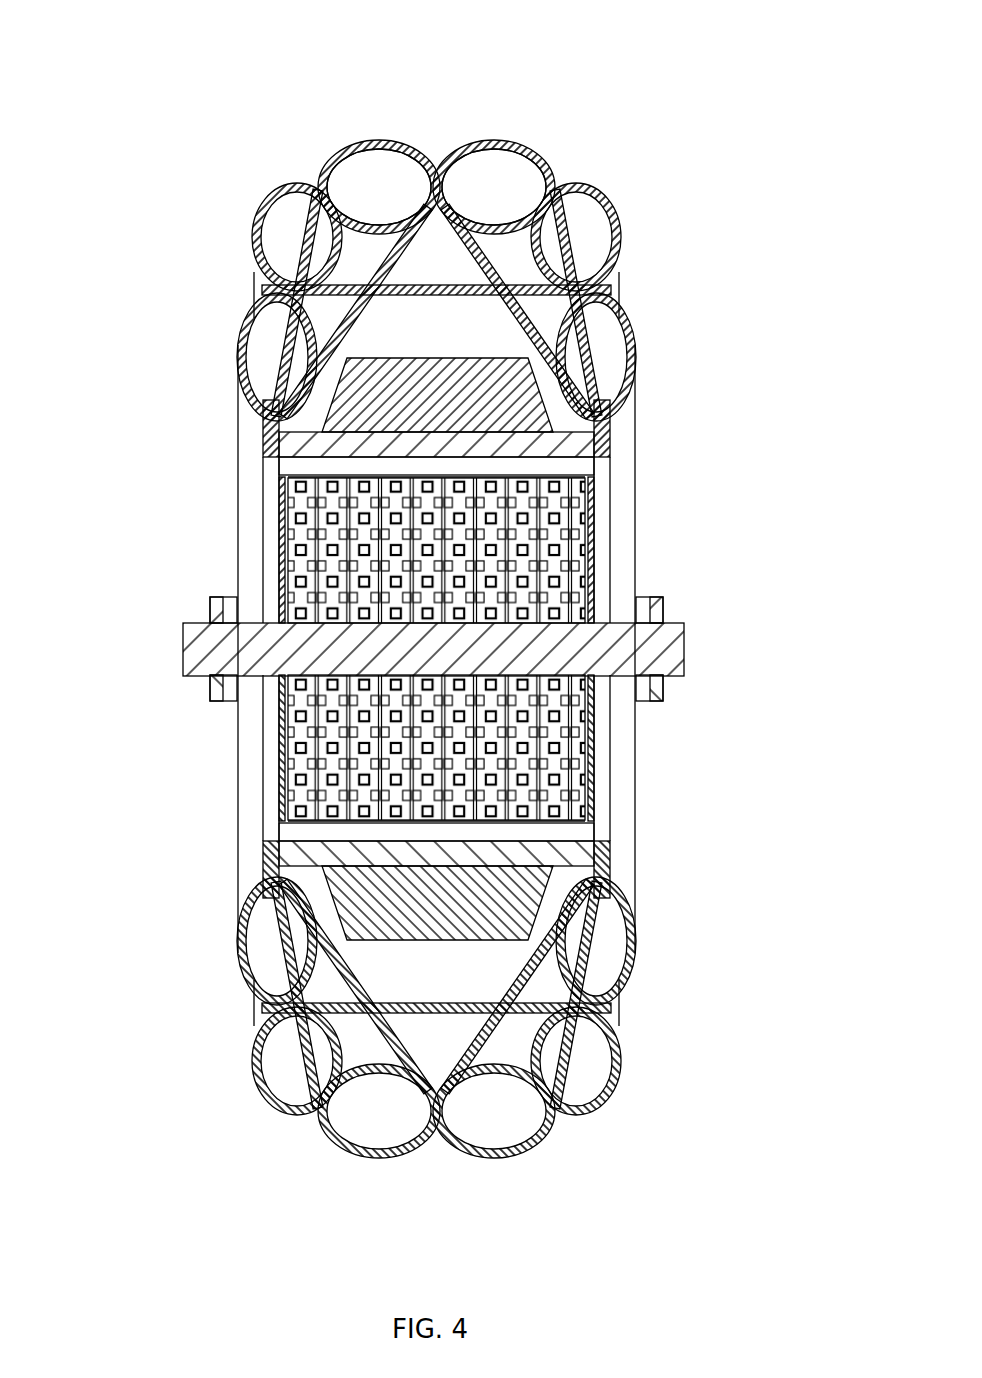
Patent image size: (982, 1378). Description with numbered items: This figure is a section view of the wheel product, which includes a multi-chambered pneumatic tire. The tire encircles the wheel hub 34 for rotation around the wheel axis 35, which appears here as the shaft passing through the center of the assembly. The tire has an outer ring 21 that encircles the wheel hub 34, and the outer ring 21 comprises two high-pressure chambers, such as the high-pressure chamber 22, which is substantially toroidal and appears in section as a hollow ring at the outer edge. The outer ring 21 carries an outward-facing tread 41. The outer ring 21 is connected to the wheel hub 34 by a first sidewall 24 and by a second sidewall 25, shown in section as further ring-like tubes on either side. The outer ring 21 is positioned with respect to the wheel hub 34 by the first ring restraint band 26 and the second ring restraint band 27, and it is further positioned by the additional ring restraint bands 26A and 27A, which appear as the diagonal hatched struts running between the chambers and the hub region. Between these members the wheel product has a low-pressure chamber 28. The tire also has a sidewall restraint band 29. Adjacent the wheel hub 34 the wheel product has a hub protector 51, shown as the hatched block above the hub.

The outer ring 21 is at (388, 140).
The high-pressure chamber 22 is at (500, 145).
The outward-facing tread 41 is at (490, 185).
The sidewall restraint band 29 is at (345, 205).
The second sidewall 25 is at (262, 287).
The first sidewall 24 is at (615, 245).
The second ring restraint band 27 is at (255, 425).
The first ring restraint band 26 is at (565, 222).
The additional ring restraint band 27A is at (300, 255).
The low-pressure chamber 28 is at (295, 380).
The additional ring restraint band 26A is at (560, 350).
The hub protector 51 is at (473, 360).
The wheel hub 34 is at (603, 392).
The wheel axis 35 is at (665, 615).